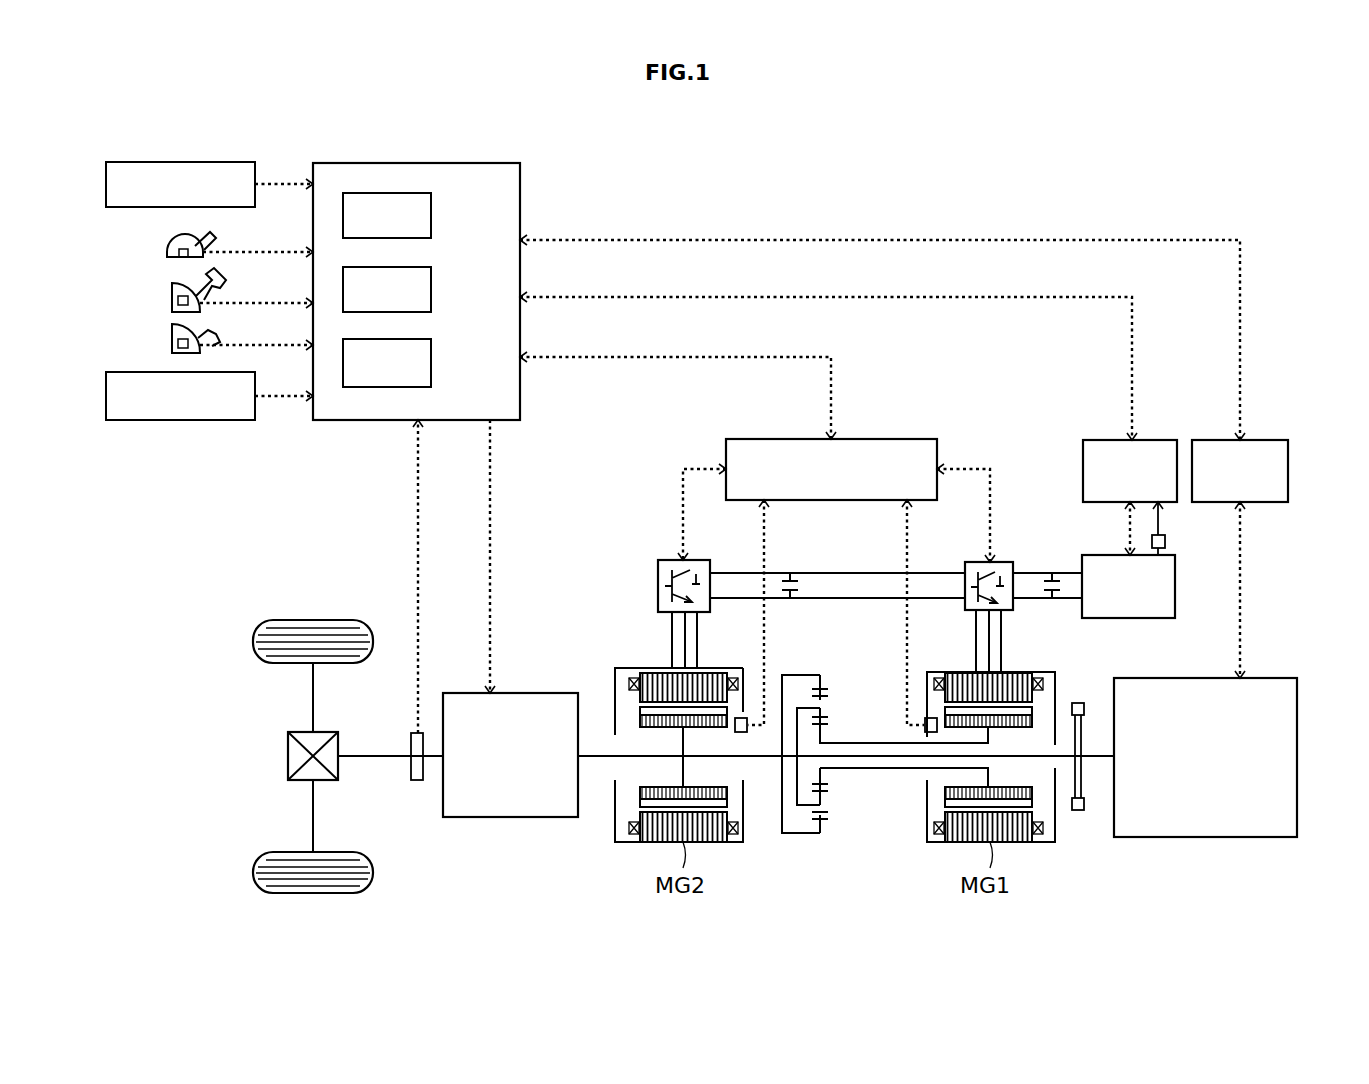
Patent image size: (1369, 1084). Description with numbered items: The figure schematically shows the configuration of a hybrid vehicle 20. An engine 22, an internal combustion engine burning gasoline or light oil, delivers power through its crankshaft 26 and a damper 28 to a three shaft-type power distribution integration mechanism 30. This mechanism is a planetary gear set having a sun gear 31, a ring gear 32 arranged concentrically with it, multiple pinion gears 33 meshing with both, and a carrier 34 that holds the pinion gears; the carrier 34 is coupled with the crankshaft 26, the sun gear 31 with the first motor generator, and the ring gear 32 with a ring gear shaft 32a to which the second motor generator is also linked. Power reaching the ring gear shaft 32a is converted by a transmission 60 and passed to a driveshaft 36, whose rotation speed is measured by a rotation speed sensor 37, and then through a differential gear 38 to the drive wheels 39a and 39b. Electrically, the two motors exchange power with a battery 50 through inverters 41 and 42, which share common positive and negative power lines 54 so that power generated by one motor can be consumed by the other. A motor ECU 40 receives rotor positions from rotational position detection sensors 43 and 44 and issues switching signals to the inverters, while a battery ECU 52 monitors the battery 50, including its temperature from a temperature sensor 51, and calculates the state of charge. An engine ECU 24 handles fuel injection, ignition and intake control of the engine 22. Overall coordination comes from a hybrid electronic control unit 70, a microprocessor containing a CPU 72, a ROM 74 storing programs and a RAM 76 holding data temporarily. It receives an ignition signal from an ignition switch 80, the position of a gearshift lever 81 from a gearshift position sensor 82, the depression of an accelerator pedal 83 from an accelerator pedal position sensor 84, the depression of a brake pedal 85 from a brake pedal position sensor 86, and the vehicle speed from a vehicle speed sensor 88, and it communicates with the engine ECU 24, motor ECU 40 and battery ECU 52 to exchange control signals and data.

The hybrid vehicle 20 is at (1080, 176).
The engine 22 is at (1297, 738).
The engine ECU 24 is at (1260, 440).
The crankshaft 26 is at (1097, 757).
The damper 28 is at (1078, 810).
The power distribution integration mechanism 30 is at (885, 738).
The sun gear 31 is at (823, 775).
The ring gear 32 is at (823, 833).
The ring gear shaft 32a is at (758, 760).
The pinion gears 33 is at (823, 805).
The carrier 34 is at (804, 703).
The driveshaft 36 is at (390, 760).
The rotation speed sensor 37 is at (418, 780).
The differential gear 38 is at (288, 758).
The drive wheel 39a is at (313, 620).
The drive wheel 39b is at (313, 893).
The motor ECU 40 is at (873, 440).
The inverter 41 is at (1010, 562).
The inverter 42 is at (700, 562).
The rotational position detection sensor 43 is at (930, 718).
The rotational position detection sensor 44 is at (740, 718).
The battery 50 is at (1128, 618).
The temperature sensor 51 is at (1165, 540).
The battery ECU 52 is at (1103, 440).
The power lines 54 is at (820, 595).
The transmission 60 is at (510, 817).
The hybrid electronic control unit 70 is at (416, 273).
The CPU 72 is at (431, 216).
The ROM 74 is at (431, 290).
The RAM 76 is at (431, 363).
The ignition switch 80 is at (106, 184).
The gearshift lever 81 is at (200, 236).
The gearshift position sensor 82 is at (179, 253).
The accelerator pedal 83 is at (205, 290).
The accelerator pedal position sensor 84 is at (178, 303).
The brake pedal 85 is at (200, 337).
The brake pedal position sensor 86 is at (178, 345).
The vehicle speed sensor 88 is at (106, 396).